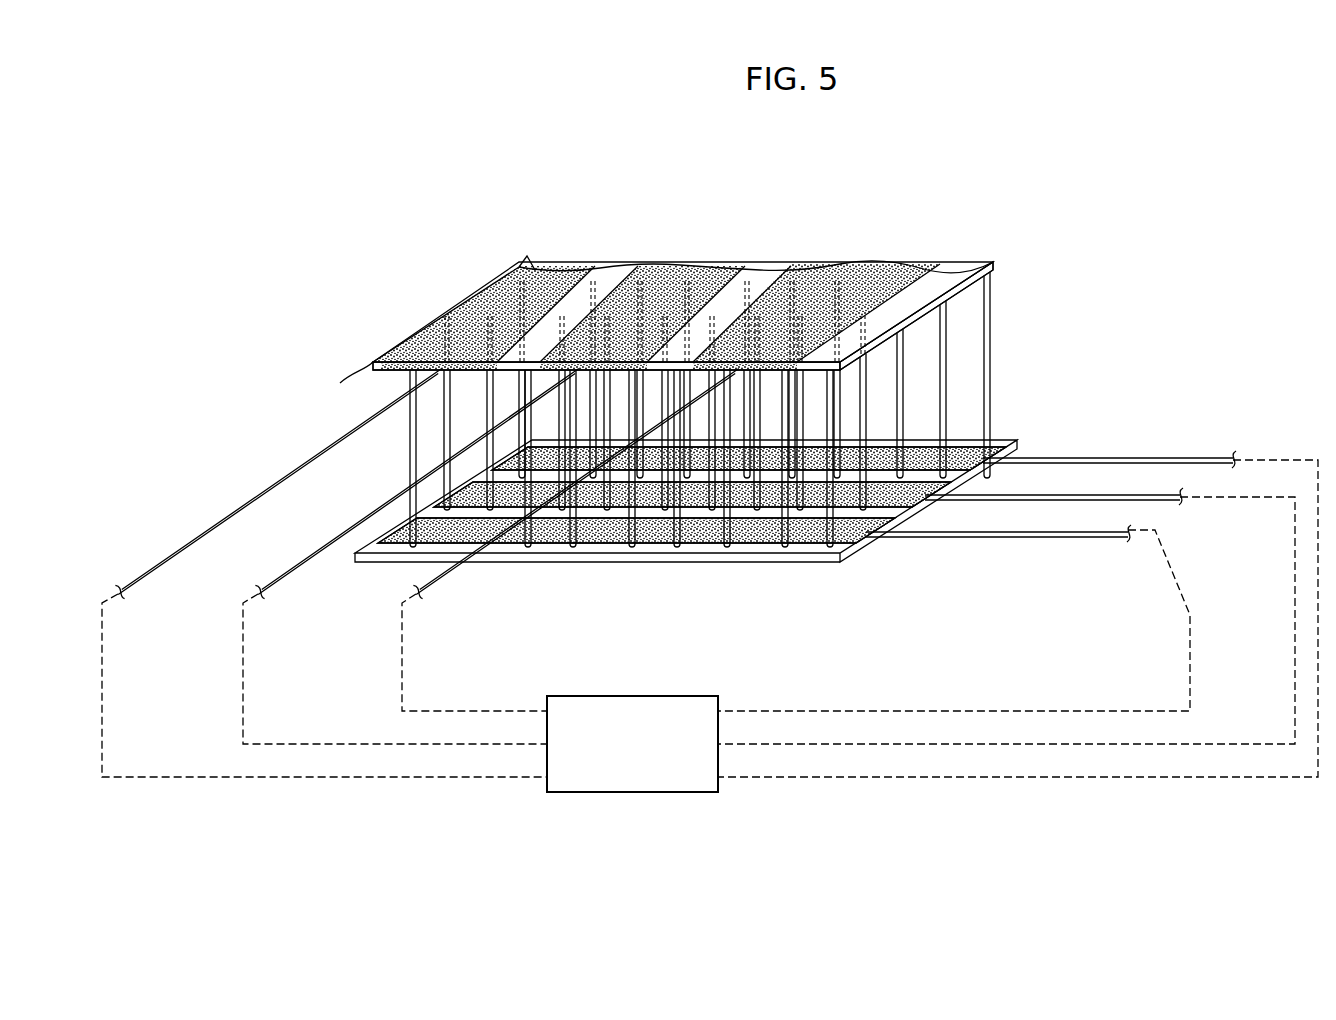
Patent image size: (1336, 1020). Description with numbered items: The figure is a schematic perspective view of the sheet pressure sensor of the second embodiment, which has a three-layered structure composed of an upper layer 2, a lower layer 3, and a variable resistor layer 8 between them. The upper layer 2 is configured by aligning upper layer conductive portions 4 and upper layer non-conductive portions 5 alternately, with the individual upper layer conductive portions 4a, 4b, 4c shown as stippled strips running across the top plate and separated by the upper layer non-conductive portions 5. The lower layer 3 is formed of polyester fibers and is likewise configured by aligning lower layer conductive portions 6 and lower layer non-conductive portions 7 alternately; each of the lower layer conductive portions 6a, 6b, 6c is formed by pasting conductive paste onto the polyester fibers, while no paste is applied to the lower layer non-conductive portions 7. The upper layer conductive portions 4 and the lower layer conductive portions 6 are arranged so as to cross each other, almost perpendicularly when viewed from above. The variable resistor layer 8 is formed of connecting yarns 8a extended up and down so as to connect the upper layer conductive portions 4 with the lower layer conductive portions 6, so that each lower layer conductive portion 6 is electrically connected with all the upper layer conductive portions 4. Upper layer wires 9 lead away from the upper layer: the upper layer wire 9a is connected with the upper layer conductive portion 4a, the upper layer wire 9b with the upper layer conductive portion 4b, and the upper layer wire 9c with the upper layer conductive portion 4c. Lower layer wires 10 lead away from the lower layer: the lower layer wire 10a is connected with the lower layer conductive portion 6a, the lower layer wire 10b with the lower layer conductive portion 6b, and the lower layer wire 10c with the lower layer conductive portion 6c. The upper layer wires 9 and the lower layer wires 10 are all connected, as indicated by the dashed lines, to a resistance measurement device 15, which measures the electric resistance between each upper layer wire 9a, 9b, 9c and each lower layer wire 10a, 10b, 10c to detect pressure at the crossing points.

The upper layer 2 is at (719, 273).
The lower layer 3 is at (1026, 442).
The upper layer conductive portions 4 is at (676, 266).
The upper layer conductive portion 4a is at (590, 268).
The upper layer conductive portion 4b is at (742, 268).
The upper layer conductive portion 4c is at (883, 265).
The upper layer non-conductive portions 5 is at (527, 268).
The lower layer conductive portions 6 is at (772, 521).
The lower layer conductive portion 6a is at (866, 527).
The lower layer conductive portion 6b is at (917, 500).
The lower layer conductive portion 6c is at (947, 462).
The lower layer non-conductive portions 7 is at (915, 445).
The variable resistor layer 8 is at (997, 338).
The connecting yarns 8a is at (412, 460).
The upper layer wires 9 is at (420, 573).
The upper layer wire 9a is at (190, 555).
The upper layer wire 9b is at (318, 558).
The upper layer wire 9c is at (447, 575).
The lower layer wires 10 is at (1018, 575).
The lower layer wire 10a is at (1078, 530).
The lower layer wire 10b is at (1147, 495).
The lower layer wire 10c is at (1185, 457).
The resistance measurement device 15 is at (702, 792).